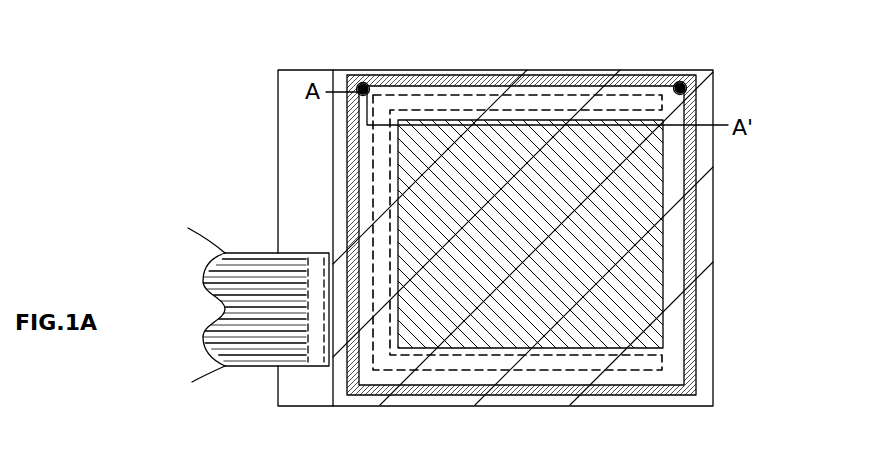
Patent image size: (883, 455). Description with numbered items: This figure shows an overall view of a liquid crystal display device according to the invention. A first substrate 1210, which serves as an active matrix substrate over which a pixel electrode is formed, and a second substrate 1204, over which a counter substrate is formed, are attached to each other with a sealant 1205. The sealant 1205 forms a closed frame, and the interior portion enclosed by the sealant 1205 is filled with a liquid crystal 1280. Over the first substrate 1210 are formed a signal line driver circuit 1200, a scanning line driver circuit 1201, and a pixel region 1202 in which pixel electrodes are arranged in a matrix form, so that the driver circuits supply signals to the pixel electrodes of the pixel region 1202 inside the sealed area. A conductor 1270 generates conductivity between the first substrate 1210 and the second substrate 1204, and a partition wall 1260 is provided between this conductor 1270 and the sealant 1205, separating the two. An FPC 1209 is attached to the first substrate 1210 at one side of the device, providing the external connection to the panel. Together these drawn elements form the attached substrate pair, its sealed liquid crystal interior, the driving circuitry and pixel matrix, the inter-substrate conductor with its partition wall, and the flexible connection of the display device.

The signal line driver circuit 1200 is at (350, 142).
The scanning line driver circuit 1201 is at (484, 102).
The pixel region 1202 is at (647, 223).
The second substrate 1204 is at (671, 380).
The sealant 1205 is at (698, 157).
The FPC 1209 is at (240, 360).
The first substrate 1210 is at (312, 167).
The partition wall 1260 is at (362, 88).
The conductor 1270 is at (370, 86).
The liquid crystal 1280 is at (693, 252).